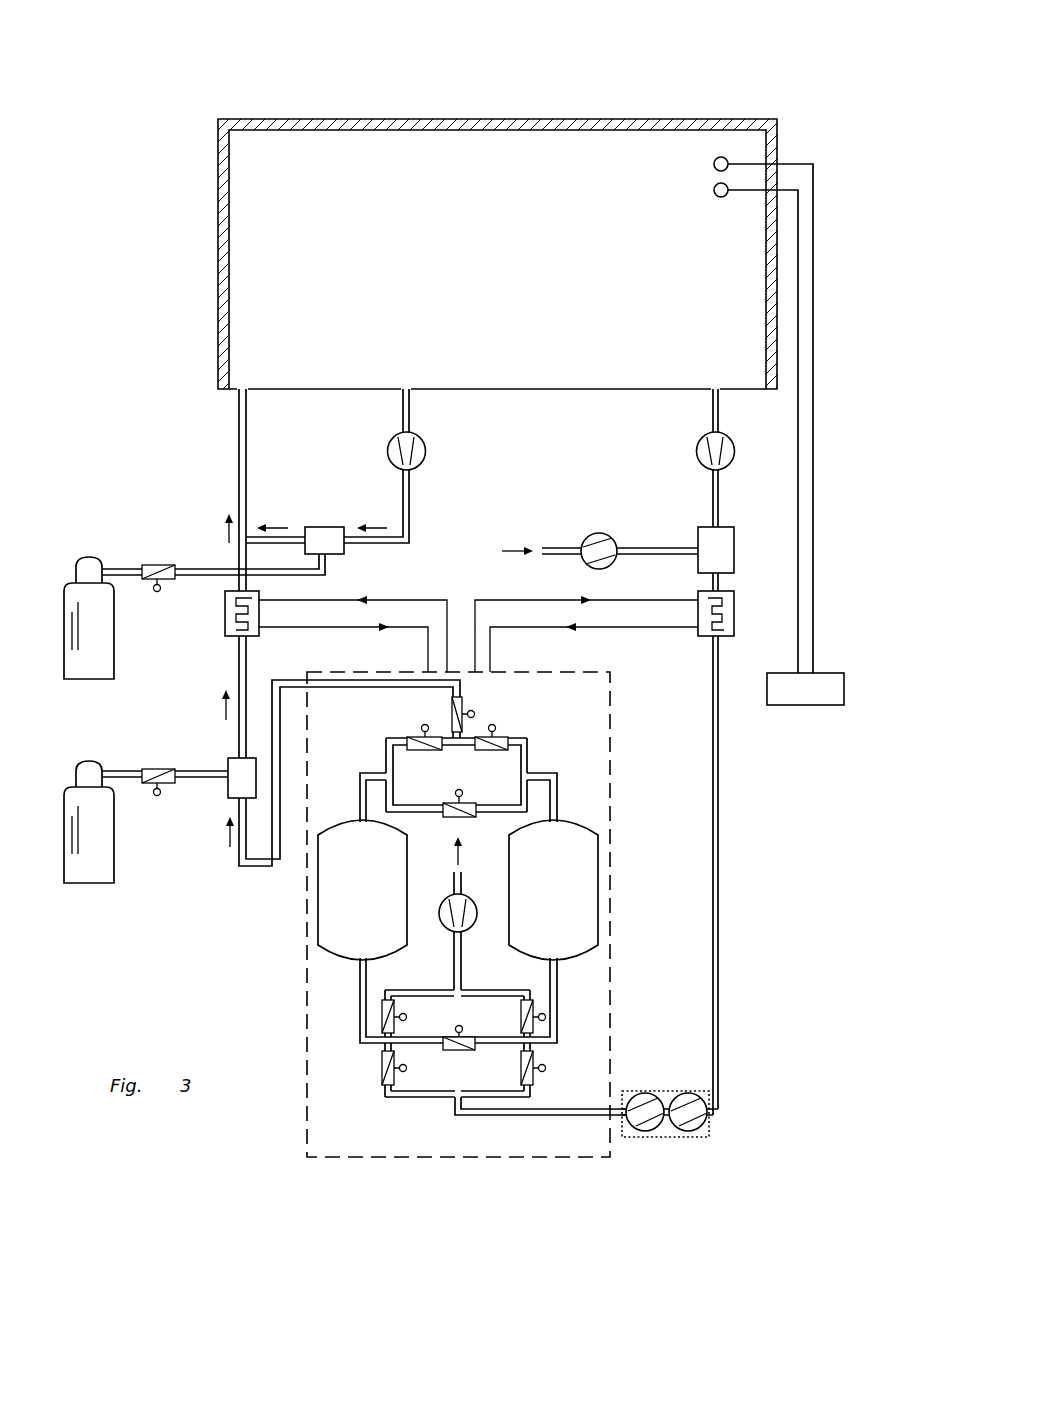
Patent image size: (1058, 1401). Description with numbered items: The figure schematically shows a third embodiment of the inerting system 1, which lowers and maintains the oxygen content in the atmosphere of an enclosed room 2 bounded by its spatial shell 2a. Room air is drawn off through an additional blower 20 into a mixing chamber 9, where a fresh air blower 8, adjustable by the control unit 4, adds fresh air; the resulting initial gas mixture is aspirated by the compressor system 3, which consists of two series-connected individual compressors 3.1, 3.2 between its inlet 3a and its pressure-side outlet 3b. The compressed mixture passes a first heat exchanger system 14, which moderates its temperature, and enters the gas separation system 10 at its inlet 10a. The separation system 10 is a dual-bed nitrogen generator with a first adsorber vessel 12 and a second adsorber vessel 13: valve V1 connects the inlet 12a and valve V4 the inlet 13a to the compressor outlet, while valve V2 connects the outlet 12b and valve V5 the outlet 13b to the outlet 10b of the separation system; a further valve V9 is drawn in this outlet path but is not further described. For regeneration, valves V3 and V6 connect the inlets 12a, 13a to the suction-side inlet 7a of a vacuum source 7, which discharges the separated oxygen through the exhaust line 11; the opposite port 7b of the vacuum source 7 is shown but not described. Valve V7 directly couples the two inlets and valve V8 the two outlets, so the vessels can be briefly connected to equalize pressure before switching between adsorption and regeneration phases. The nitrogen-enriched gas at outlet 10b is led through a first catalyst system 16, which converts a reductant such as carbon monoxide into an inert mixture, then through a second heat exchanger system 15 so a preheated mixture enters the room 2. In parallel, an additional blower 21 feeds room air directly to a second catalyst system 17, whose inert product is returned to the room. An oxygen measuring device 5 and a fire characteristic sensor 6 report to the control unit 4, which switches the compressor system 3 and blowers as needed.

The inerting system 1 is at (464, 585).
The enclosed room 2 is at (497, 195).
The spatial shell 2a is at (480, 123).
The compressor system 3 is at (686, 1139).
The individual compressor 3.1 is at (640, 1112).
The individual compressor 3.2 is at (687, 1117).
The inlet of compressor system 3a is at (708, 1120).
The outlet of compressor system 3b is at (623, 1095).
The control unit 4 is at (812, 703).
The oxygen measuring device 5 is at (715, 184).
The fire characteristic sensor 6 is at (724, 157).
The vacuum source 7 is at (442, 913).
The suction-side inlet of vacuum source 7a is at (458, 935).
The pump outlet 7b is at (458, 895).
The fresh air blower 8 is at (592, 547).
The mixing chamber 9 is at (730, 552).
The gas separation system 10 is at (358, 1157).
The inlet of gas separation system 10a is at (588, 1117).
The outlet of gas separation system 10b is at (238, 847).
The exhaust line 11 is at (460, 947).
The first adsorber vessel 12 is at (362, 890).
The inlet of first adsorber vessel 12a is at (355, 1000).
The outlet of first adsorber vessel 12b is at (355, 797).
The second adsorber vessel 13 is at (553, 890).
The inlet of second adsorber vessel 13a is at (563, 1000).
The outlet of second adsorber vessel 13b is at (565, 797).
The first heat exchanger system 14 is at (729, 633).
The second heat exchanger system 15 is at (235, 635).
The first catalyst system 16 is at (237, 792).
The second catalyst system 17 is at (225, 601).
The additional blower 20 is at (713, 453).
The additional blower 21 is at (405, 445).
The valve V1 is at (407, 1068).
The valve V2 is at (424, 747).
The valve V3 is at (409, 1016).
The valve V4 is at (519, 1068).
The valve V5 is at (491, 747).
The valve V6 is at (520, 1016).
The valve V7 is at (459, 1049).
The valve V8 is at (459, 793).
The valve V9 is at (450, 716).